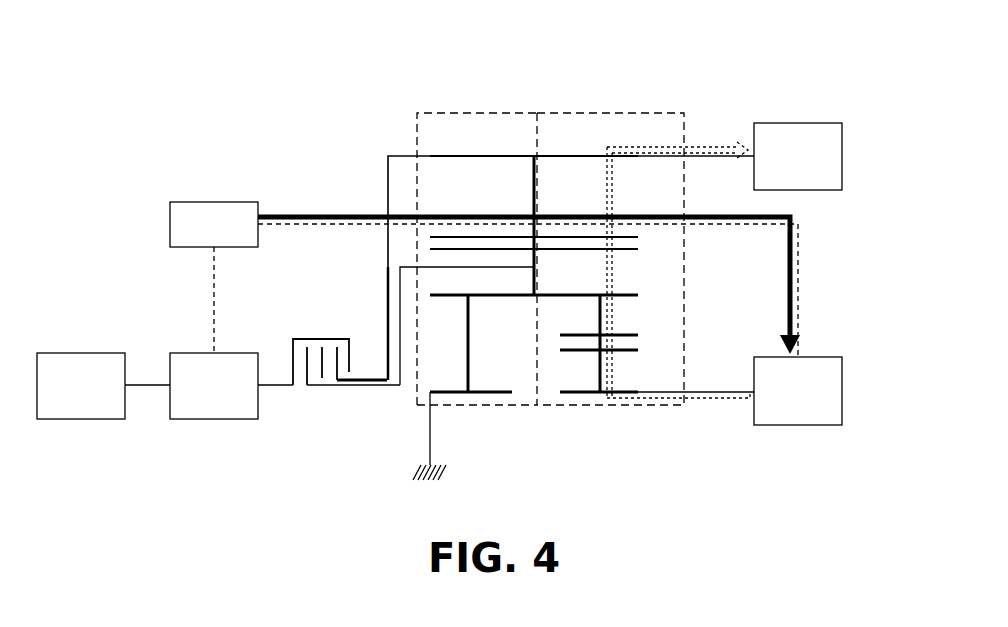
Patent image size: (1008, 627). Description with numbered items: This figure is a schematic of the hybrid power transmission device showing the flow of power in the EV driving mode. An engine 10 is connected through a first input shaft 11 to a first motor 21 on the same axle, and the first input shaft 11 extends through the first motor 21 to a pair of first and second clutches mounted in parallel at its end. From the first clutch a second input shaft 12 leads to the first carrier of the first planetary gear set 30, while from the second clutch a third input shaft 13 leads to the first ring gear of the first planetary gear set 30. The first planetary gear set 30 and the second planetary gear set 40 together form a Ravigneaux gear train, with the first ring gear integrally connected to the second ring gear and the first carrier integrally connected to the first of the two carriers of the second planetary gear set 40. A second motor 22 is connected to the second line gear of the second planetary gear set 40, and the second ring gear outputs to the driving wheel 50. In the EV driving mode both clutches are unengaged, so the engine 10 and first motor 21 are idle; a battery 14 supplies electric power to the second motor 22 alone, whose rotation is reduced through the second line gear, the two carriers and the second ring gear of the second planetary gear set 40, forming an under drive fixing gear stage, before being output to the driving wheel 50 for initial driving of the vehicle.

The engine 10 is at (80, 353).
The first input shaft 11 is at (143, 385).
The second input shaft 12 is at (400, 375).
The third input shaft 13 is at (388, 190).
The battery 14 is at (170, 223).
The first motor 21 is at (176, 353).
The second motor 22 is at (797, 425).
The first planetary gear set 30 is at (478, 110).
The second planetary gear set 40 is at (618, 108).
The driving wheel 50 is at (800, 190).